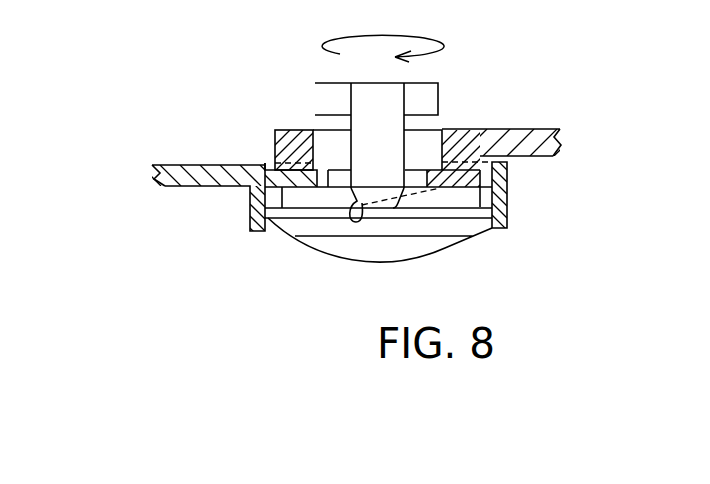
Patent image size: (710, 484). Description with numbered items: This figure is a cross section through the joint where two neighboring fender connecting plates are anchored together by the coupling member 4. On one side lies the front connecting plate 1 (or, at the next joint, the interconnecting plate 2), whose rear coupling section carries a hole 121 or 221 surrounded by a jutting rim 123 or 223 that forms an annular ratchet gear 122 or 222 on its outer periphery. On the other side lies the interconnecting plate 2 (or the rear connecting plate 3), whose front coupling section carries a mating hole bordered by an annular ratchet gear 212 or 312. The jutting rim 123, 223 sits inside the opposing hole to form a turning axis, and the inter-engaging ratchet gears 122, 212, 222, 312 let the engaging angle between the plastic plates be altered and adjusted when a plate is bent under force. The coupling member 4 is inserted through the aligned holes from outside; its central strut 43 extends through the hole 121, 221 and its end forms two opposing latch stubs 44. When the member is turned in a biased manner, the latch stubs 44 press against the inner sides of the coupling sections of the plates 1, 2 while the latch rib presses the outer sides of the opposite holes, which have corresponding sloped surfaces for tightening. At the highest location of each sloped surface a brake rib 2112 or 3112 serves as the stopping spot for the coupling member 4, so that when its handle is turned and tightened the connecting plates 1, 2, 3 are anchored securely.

The front connecting plate 1 is at (548, 128).
The interconnecting plate 2 is at (295, 156).
The rear connecting plate 3 is at (162, 165).
The coupling member 4 is at (455, 244).
The strut 43 is at (385, 125).
The latch stubs 44 is at (430, 93).
The hole 121 is at (274, 96).
The hole 221 is at (327, 143).
The annular ratchet gear 122 is at (522, 105).
The annular ratchet gear 212 is at (522, 105).
The annular ratchet gear 222 is at (522, 105).
The annular ratchet gear 312 is at (503, 128).
The jutting rim 123 is at (272, 142).
The jutting rim 223 is at (265, 182).
The brake rib 2112 is at (326, 266).
The brake rib 3112 is at (347, 198).